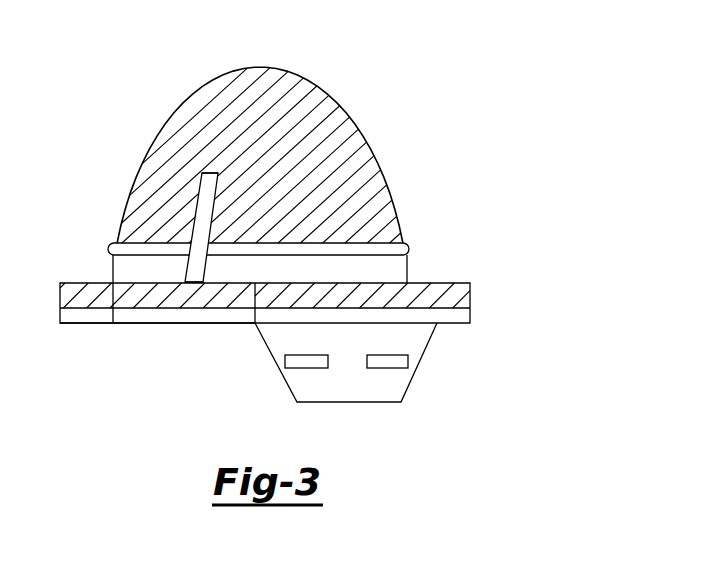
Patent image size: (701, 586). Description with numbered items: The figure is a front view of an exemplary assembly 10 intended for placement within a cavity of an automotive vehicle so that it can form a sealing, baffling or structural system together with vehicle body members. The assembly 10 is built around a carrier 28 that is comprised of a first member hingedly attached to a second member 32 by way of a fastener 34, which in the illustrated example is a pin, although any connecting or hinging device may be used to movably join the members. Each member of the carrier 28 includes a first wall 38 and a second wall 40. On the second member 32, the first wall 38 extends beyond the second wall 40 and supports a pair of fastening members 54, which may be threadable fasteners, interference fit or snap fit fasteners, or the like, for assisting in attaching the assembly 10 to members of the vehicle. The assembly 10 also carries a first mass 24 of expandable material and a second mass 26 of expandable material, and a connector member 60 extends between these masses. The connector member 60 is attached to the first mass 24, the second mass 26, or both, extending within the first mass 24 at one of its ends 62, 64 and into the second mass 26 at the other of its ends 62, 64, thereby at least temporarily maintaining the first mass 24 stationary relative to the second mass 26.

The assembly 10 is at (385, 109).
The first mass of expandable material 24 is at (293, 92).
The second mass of expandable material 26 is at (282, 316).
The carrier 28 is at (415, 373).
The second member 32 is at (102, 335).
The fastener 34 is at (414, 249).
The first wall 38 is at (137, 271).
The second wall 40 is at (168, 315).
The fastening members 54 is at (323, 373).
The connector member 60 is at (156, 256).
The end of connector member 62 is at (203, 172).
The end of connector member 64 is at (193, 273).